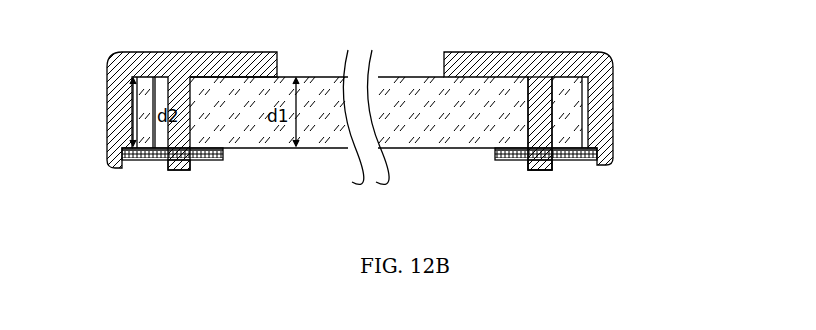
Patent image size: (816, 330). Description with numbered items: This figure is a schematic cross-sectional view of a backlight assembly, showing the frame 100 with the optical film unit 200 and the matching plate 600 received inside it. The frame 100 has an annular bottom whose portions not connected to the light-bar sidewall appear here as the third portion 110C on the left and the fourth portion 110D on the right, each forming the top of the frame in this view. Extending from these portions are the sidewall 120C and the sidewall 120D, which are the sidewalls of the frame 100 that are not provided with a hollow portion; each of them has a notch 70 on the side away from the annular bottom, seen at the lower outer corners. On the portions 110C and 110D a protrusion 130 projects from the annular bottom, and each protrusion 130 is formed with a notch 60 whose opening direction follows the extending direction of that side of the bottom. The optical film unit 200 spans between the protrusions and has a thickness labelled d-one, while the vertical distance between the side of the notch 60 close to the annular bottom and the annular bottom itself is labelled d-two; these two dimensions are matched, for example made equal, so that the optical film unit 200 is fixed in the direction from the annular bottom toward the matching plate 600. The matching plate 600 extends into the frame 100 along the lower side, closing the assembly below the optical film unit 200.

The frame 100 is at (603, 100).
The third portion of the annular bottom 110C is at (163, 58).
The fourth portion of the annular bottom 110D is at (562, 52).
The sidewall 120C is at (117, 105).
The sidewall 120D is at (613, 102).
The optical film unit 200 is at (322, 85).
The protrusion 130 is at (537, 102).
The notch 60 is at (185, 148).
The matching plate 600 is at (495, 154).
The notch 70 is at (123, 170).